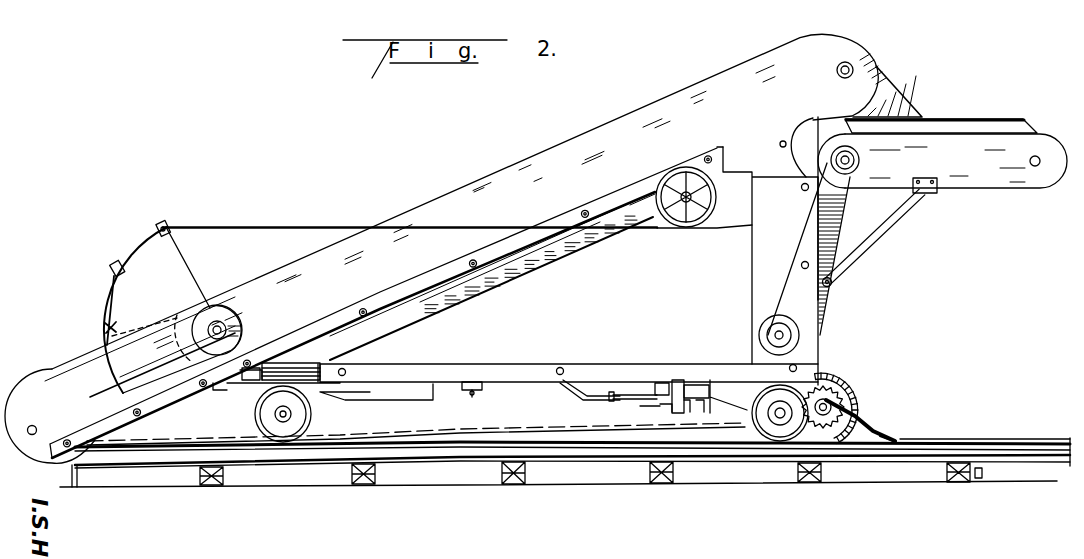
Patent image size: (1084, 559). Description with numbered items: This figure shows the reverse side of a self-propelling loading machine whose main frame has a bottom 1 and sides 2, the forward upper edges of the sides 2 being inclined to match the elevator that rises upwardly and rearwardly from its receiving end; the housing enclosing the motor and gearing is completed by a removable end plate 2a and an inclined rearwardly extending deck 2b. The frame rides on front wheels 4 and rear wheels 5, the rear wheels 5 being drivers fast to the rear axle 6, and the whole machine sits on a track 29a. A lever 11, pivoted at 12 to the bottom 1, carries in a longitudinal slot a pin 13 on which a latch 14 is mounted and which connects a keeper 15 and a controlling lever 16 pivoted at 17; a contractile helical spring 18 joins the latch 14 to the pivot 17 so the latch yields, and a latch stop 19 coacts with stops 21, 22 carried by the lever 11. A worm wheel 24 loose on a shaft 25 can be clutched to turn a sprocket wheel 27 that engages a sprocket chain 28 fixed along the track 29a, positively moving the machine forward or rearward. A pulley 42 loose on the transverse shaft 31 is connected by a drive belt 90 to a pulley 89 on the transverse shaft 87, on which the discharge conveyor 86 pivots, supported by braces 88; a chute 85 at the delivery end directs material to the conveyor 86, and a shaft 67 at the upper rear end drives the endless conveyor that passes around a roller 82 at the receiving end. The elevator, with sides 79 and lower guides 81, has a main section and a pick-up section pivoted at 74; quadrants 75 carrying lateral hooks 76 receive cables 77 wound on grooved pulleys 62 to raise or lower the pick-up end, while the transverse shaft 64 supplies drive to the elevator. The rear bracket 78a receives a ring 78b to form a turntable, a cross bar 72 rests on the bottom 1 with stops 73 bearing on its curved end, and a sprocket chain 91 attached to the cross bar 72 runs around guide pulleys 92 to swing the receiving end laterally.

The bottom 1 is at (450, 384).
The sides 2 is at (706, 251).
The end plate 2a is at (822, 307).
The inclined rearwardly extending deck 2b is at (424, 316).
The front wheels 4 is at (292, 443).
The rear wheels 5 is at (778, 405).
The rear axle 6 is at (780, 425).
The lever 11 is at (584, 399).
The pivot 12 is at (474, 395).
The pin 13 is at (675, 413).
The latch 14 is at (657, 409).
The keeper 15 is at (653, 389).
The lever 16 is at (674, 388).
The pivot 17 is at (686, 389).
The contractile helical spring 18 is at (688, 413).
The stop 19 is at (716, 414).
The stop 21 is at (701, 413).
The stop 22 is at (617, 403).
The worm wheel 24 is at (850, 380).
The shaft 25 is at (850, 393).
The sprocket wheel 27 is at (850, 421).
The sprocket chain 28 is at (903, 420).
The track 29a is at (443, 462).
The transverse shaft 31 is at (792, 334).
The pulley 42 is at (761, 328).
The grooved pulleys 62 is at (693, 229).
The transverse shaft 64 is at (779, 145).
The shaft 67 is at (853, 65).
The cross bar 72 is at (248, 377).
The stops 73 is at (216, 391).
The pivot 74 is at (234, 323).
The quadrants 75 is at (183, 282).
The lateral hooks 76 is at (115, 264).
The cables 77 is at (306, 227).
The bracket 78a is at (648, 200).
The ring 78b is at (797, 142).
The sides 79 is at (482, 184).
The guides 81 is at (478, 272).
The roller 82 is at (34, 426).
The chute 85 is at (890, 82).
The conveyor 86 is at (975, 132).
The transverse shaft 87 is at (837, 147).
The braces 88 is at (858, 257).
The pulley 89 is at (942, 161).
The drive belt 90 is at (806, 224).
The sprocket chain 91 is at (320, 380).
The guide pulleys 92 is at (293, 364).